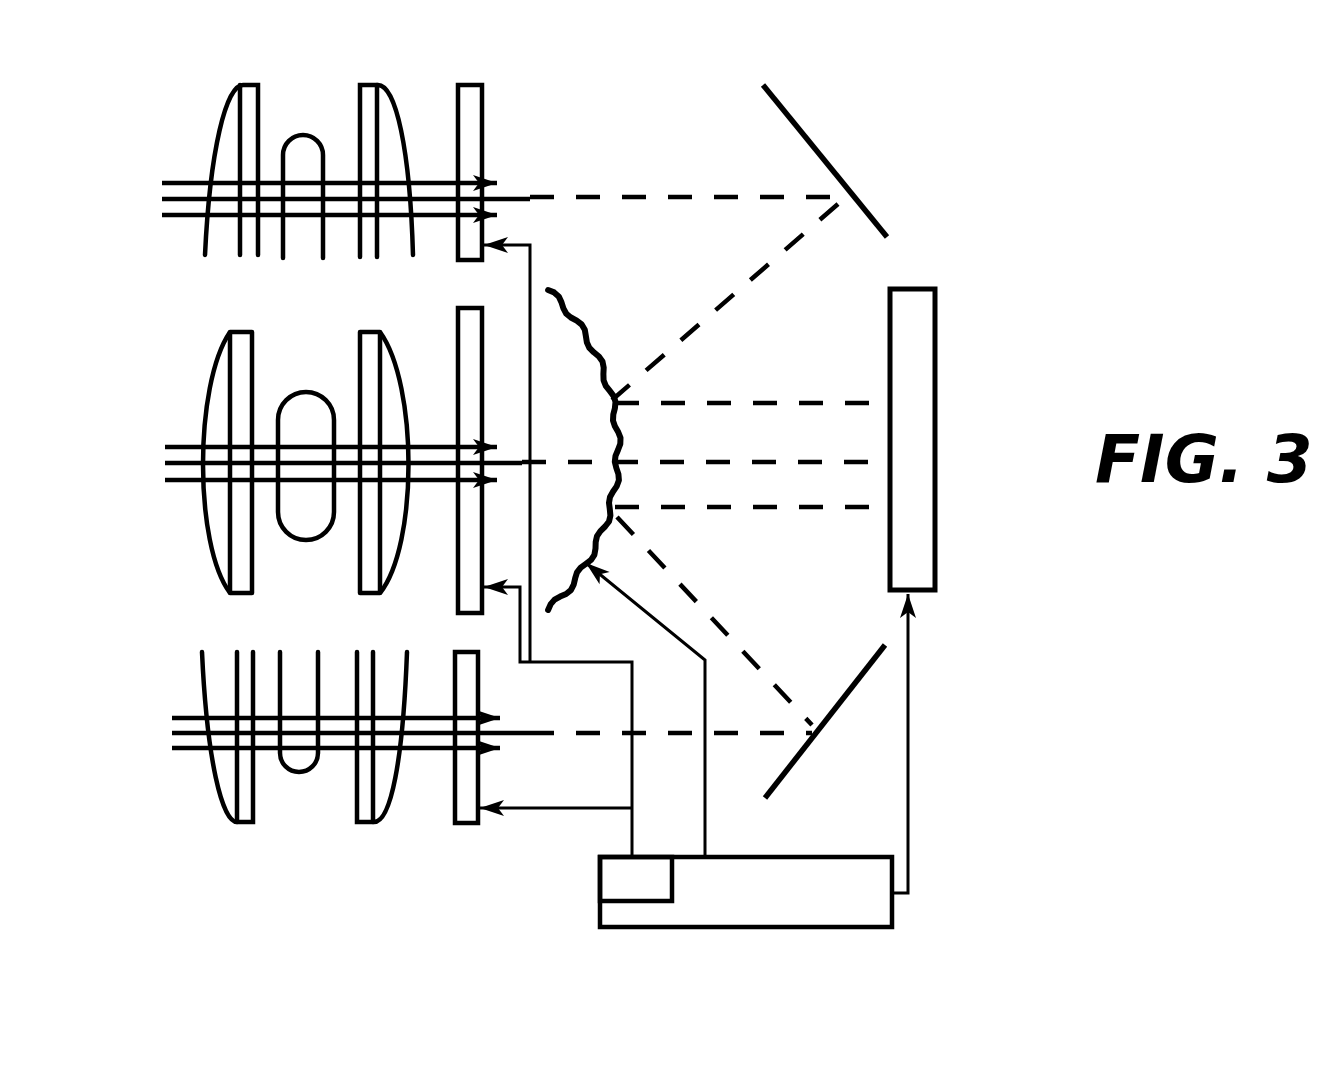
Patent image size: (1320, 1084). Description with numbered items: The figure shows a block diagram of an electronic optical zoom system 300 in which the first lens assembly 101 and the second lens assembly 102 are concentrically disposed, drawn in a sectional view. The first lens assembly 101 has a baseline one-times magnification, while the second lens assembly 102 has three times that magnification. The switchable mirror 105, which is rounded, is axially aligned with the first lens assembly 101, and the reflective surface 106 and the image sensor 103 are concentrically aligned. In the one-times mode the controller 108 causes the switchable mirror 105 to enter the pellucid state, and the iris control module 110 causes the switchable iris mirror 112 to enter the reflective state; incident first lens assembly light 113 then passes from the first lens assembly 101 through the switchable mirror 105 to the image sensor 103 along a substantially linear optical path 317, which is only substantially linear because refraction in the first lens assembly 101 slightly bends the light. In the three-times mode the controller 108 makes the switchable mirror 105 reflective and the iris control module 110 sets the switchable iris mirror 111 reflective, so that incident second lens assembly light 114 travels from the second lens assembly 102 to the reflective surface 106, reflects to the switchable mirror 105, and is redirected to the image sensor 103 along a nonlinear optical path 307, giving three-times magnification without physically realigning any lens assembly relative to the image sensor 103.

The first lens assembly 101 is at (202, 520).
The second lens assembly 102 is at (257, 85).
The image sensor 103 is at (938, 507).
The switchable mirror 105 is at (597, 360).
The reflective surface 106 is at (828, 155).
The controller 108 is at (793, 856).
The iris control module 110 is at (598, 875).
The switchable iris mirror 111 is at (455, 538).
The switchable iris mirror 112 is at (483, 132).
The first lens assembly light 113 is at (165, 463).
The second lens assembly light 114 is at (163, 183).
The electronic optical zoom system 300 is at (1072, 268).
The nonlinear optical path 307 is at (585, 196).
The substantially linear optical path 317 is at (677, 458).